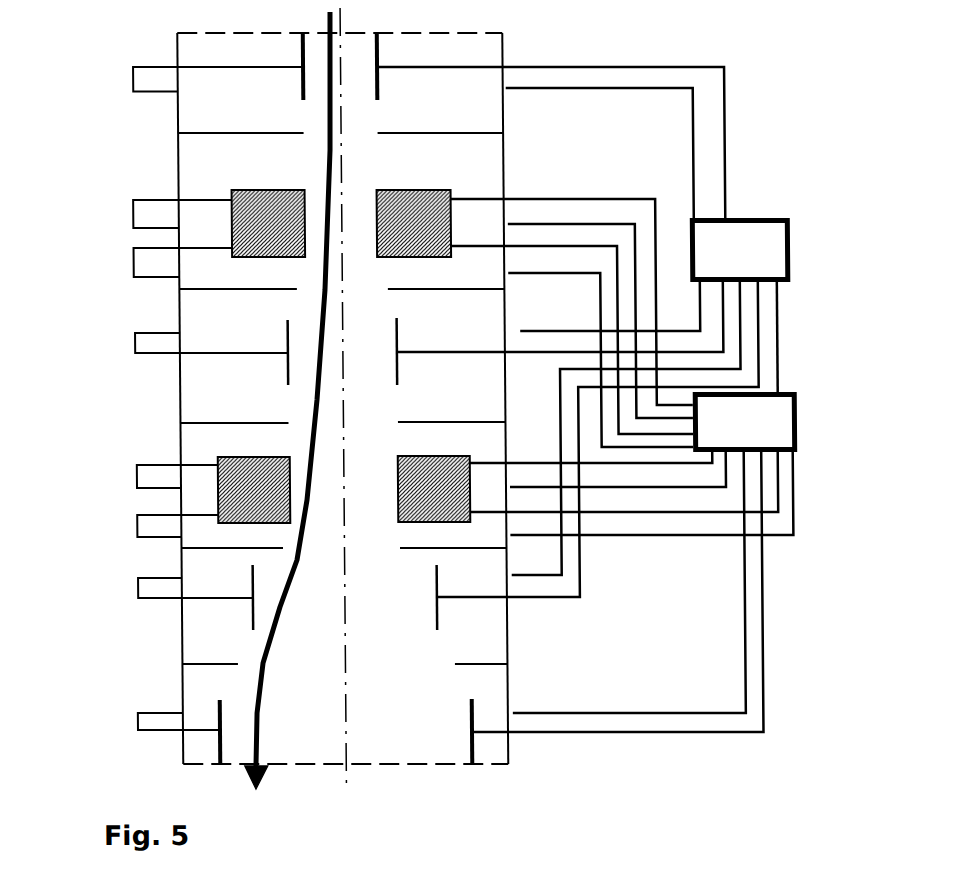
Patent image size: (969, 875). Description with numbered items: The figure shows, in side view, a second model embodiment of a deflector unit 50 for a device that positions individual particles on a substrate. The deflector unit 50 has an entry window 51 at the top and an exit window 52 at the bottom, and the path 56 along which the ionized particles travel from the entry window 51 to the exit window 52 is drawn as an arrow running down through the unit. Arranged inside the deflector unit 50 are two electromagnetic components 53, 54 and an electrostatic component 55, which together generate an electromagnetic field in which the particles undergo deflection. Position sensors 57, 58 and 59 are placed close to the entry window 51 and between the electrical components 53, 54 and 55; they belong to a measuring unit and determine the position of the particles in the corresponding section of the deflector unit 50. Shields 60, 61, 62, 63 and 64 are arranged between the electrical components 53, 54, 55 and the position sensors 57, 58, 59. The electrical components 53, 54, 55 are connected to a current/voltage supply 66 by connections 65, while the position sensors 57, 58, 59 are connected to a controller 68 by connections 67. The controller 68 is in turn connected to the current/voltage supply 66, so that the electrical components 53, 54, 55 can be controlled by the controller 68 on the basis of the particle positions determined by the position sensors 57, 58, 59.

The deflector unit 50 is at (152, 44).
The entry window 51 is at (437, 33).
The exit window 52 is at (383, 765).
The electromagnetic component 53 is at (293, 190).
The electromagnetic component 54 is at (265, 457).
The electrostatic component 55 is at (214, 700).
The path 56 is at (263, 660).
The position sensor 57 is at (302, 92).
The position sensor 58 is at (285, 366).
The position sensor 59 is at (250, 615).
The shield 60 is at (485, 132).
The shield 61 is at (427, 289).
The shield 62 is at (455, 422).
The shield 63 is at (235, 548).
The shield 64 is at (478, 663).
The connections 65 is at (725, 97).
The current/voltage supply 66 is at (743, 432).
The connections 67 is at (778, 323).
The controller 68 is at (752, 250).